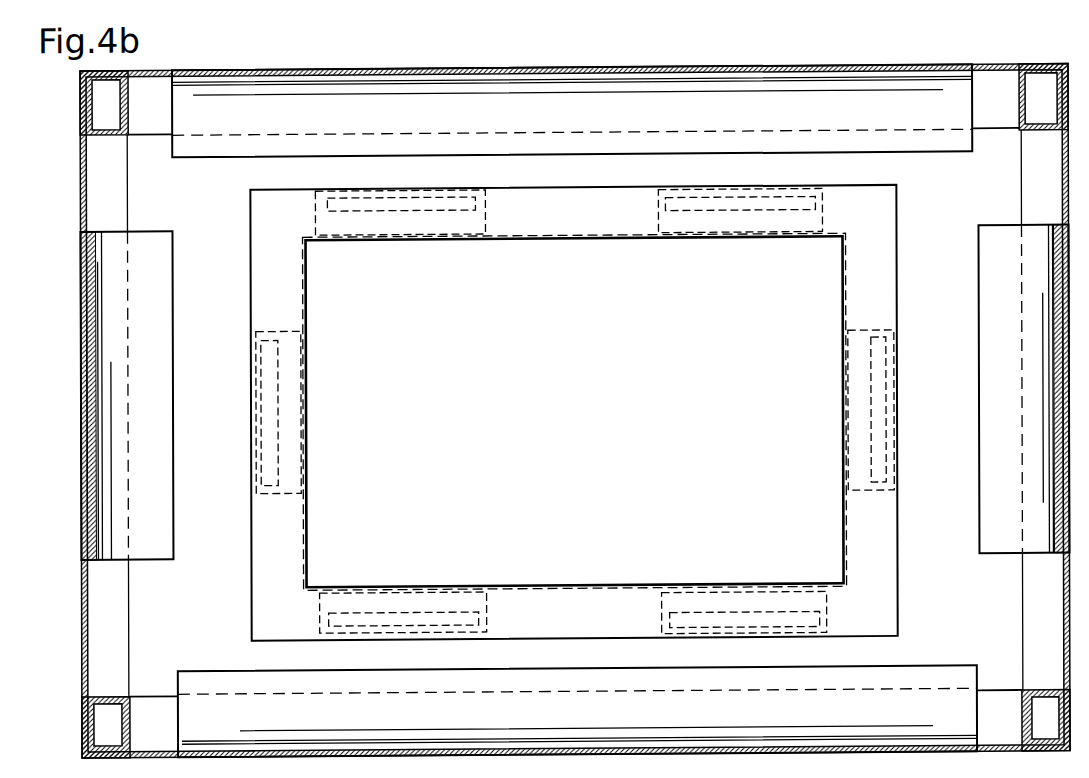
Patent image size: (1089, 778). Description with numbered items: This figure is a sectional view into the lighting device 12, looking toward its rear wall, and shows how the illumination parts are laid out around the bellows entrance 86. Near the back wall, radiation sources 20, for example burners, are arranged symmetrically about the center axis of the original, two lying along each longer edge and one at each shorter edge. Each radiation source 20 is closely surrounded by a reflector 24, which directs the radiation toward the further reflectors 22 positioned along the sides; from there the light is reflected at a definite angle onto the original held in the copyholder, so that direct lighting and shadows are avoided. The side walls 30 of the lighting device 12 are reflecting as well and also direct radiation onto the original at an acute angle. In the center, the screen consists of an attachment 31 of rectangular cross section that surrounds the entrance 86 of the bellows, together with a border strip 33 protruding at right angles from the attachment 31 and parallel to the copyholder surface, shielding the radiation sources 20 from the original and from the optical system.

The lighting device 12 is at (767, 69).
The side walls 30 is at (152, 72).
The further reflectors 22 is at (941, 147).
The border strip 33 is at (897, 612).
The attachment 31 is at (314, 542).
The entrance 86 is at (530, 386).
The reflectors 24 is at (316, 230).
The radiation sources 20 is at (452, 207).